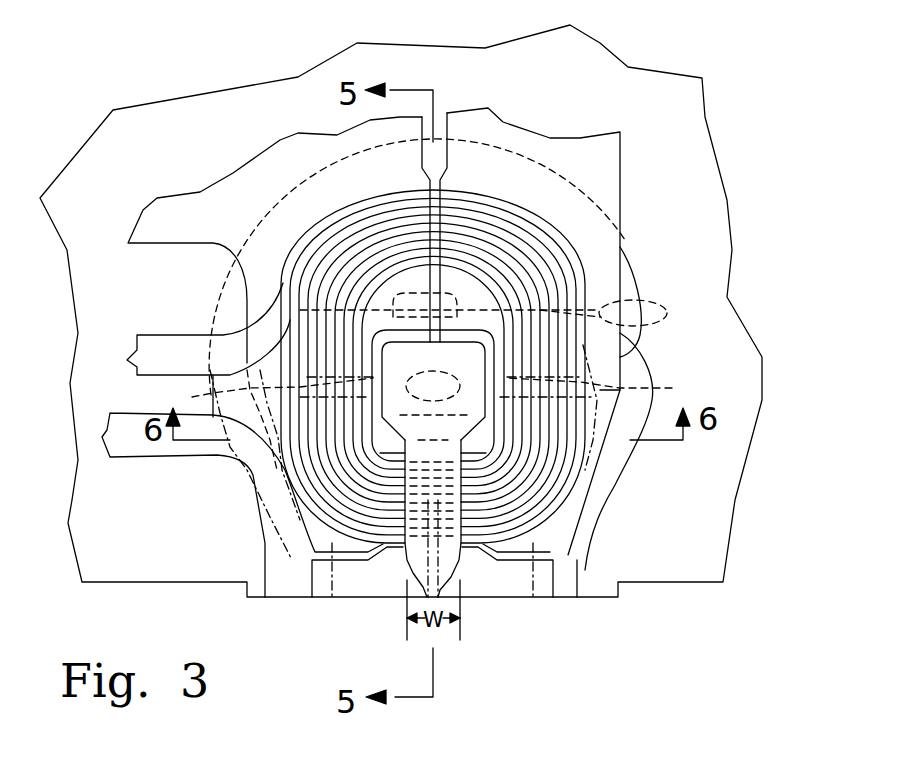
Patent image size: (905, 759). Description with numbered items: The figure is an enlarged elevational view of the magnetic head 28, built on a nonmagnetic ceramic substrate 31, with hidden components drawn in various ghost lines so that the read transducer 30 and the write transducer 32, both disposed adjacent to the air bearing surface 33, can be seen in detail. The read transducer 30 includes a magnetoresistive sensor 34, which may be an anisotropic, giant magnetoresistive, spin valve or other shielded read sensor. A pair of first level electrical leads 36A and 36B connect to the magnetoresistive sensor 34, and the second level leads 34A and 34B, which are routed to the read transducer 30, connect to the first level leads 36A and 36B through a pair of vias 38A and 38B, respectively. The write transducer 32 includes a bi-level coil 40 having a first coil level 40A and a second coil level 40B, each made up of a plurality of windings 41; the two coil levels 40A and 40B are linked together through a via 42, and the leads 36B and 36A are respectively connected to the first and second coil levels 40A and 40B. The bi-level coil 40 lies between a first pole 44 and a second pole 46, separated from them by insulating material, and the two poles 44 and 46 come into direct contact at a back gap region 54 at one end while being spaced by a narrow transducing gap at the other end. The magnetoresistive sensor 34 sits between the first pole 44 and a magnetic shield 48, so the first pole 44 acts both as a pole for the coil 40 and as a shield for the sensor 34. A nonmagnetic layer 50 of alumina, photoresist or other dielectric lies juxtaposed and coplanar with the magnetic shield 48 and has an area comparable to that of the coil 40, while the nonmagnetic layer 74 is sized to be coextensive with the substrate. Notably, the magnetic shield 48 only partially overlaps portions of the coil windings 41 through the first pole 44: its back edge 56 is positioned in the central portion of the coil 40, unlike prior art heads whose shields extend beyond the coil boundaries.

The magnetic head 28 is at (157, 75).
The read transducer 30 is at (460, 600).
The substrate 31 is at (717, 143).
The write transducer 32 is at (389, 560).
The air bearing surface 33 is at (270, 600).
The magnetoresistive sensor 34 is at (403, 597).
The second level electrical lead 34A is at (237, 190).
The second level electrical lead 34B is at (577, 148).
The first level electrical lead 36A is at (172, 333).
The first level electrical lead 36B is at (147, 457).
The via 38A is at (261, 465).
The via 38B is at (611, 407).
The bi-level coil 40 is at (401, 188).
The first coil level 40A is at (335, 523).
The second coil level 40B is at (298, 262).
The windings 41 is at (572, 283).
The via 42 is at (447, 296).
The first pole 44 is at (556, 565).
The second pole 46 is at (470, 556).
The magnetic shield 48 is at (603, 517).
The nonmagnetic layer 50 is at (633, 270).
The back gap region 54 is at (448, 399).
The back edge of the magnetic shield 56 is at (620, 316).
The nonmagnetic layer 74 is at (707, 200).